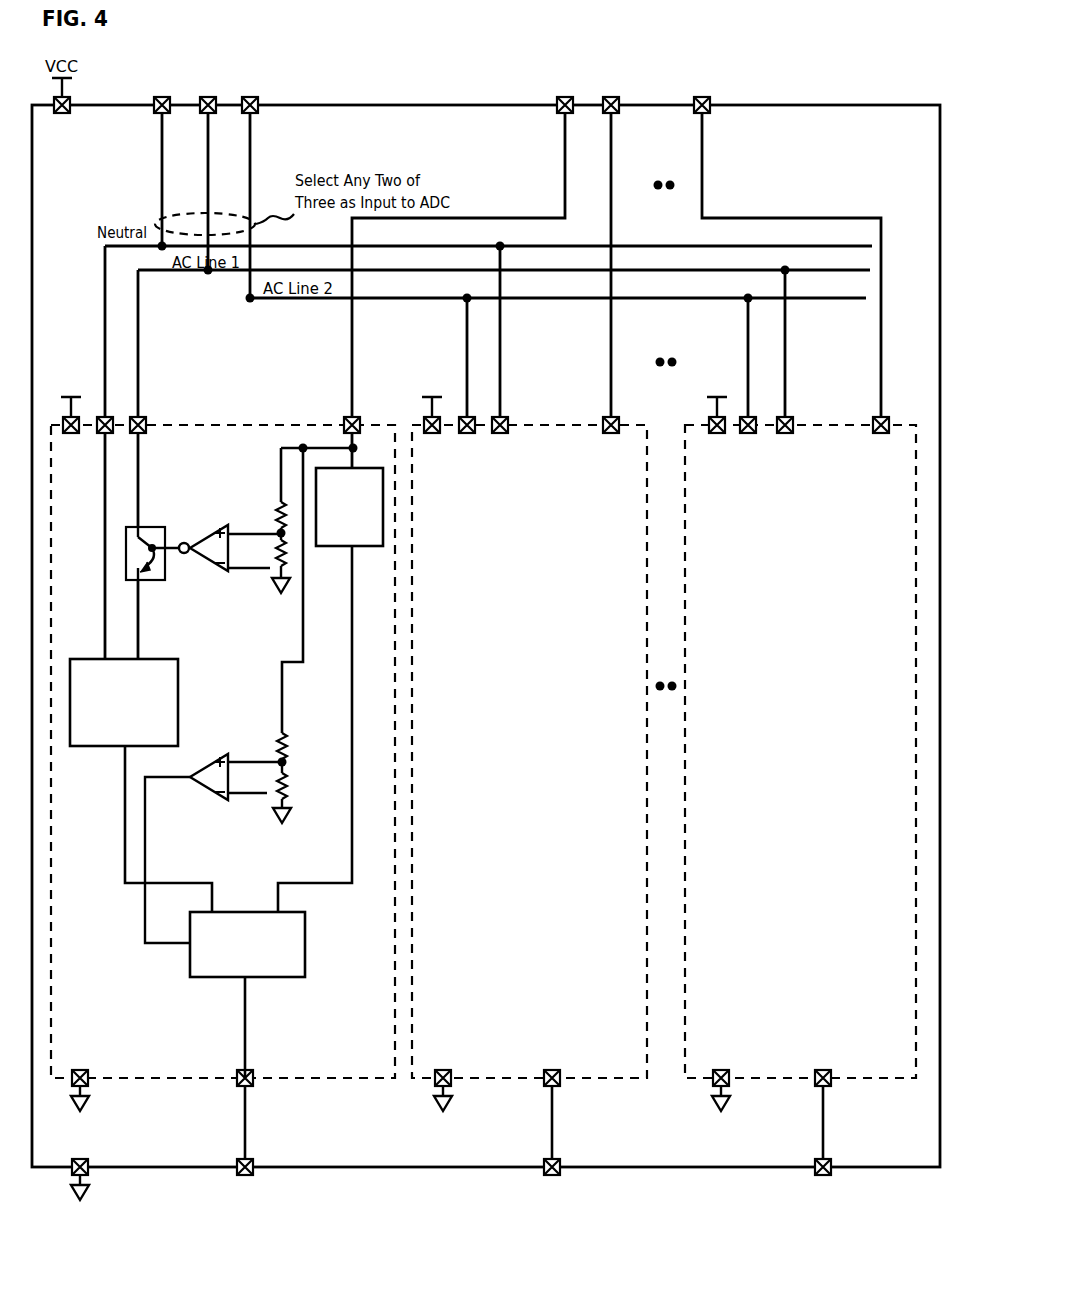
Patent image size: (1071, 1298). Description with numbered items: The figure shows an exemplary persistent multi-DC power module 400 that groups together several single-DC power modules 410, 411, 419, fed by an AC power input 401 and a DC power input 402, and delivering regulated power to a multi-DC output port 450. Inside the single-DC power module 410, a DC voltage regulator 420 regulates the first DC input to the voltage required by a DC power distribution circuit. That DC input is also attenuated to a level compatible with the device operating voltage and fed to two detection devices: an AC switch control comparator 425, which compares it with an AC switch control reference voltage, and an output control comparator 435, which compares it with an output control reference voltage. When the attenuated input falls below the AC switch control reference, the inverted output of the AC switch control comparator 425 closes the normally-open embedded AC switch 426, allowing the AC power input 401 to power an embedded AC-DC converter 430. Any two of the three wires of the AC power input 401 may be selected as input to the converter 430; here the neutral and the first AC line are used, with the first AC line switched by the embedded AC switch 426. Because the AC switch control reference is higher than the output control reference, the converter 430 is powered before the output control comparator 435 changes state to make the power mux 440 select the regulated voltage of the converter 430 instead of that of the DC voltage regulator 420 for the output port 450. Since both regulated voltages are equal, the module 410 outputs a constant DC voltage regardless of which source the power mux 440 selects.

The persistent multi-DC power module 400 is at (809, 105).
The AC power input 401 is at (219, 175).
The DC power input 402 is at (616, 263).
The single-DC power module 410 is at (223, 762).
The single-DC power module 411 is at (547, 426).
The single-DC power module 419 is at (832, 424).
The DC voltage regulator 420 is at (330, 690).
The AC switch control comparator 425 is at (213, 572).
The embedded AC switch 426 is at (168, 524).
The embedded AC-DC converter 430 is at (141, 785).
The output control comparator 435 is at (219, 803).
The power mux 440 is at (247, 1035).
The DC output port 450 is at (840, 1180).